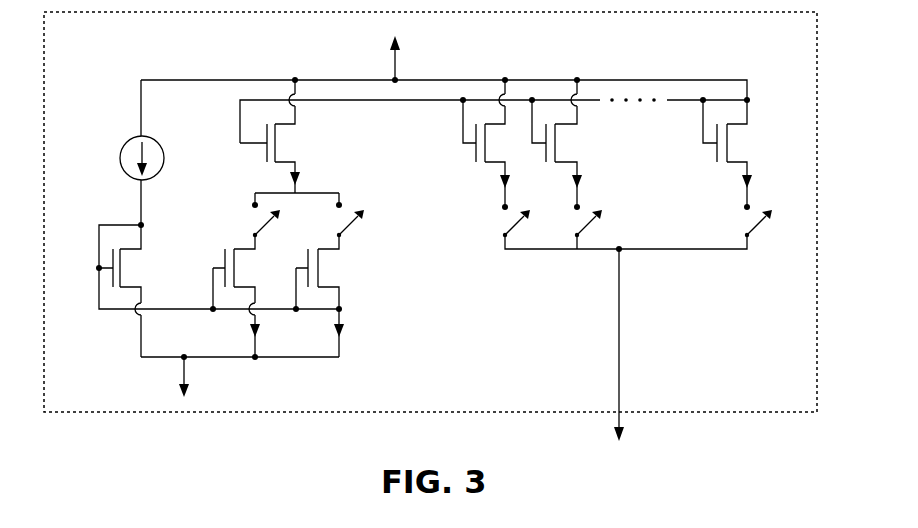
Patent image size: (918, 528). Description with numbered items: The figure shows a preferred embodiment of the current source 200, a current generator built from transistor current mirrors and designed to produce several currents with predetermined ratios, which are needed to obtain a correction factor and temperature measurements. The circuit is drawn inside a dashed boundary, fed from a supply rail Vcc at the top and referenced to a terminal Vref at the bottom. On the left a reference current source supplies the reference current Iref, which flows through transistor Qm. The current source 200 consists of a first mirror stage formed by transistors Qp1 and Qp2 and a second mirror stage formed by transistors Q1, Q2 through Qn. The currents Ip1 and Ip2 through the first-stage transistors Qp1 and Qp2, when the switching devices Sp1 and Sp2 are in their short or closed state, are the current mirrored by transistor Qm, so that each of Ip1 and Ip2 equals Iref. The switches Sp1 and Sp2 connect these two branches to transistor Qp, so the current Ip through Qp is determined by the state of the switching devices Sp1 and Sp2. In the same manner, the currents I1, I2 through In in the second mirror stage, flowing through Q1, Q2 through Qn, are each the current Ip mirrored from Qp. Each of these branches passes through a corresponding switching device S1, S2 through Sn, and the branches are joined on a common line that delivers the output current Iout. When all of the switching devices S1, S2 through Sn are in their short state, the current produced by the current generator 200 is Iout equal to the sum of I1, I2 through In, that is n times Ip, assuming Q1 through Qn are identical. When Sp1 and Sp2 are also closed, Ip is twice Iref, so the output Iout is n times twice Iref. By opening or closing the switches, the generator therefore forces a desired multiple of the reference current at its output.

The current source 200 is at (440, 412).
The supply voltage terminal Vcc is at (417, 59).
The reference current Iref is at (120, 154).
The transistor Qm is at (217, 291).
The reference voltage terminal Vref is at (240, 375).
The transistor Qp is at (287, 125).
The current Ip is at (310, 178).
The switching device Sp1 is at (242, 219).
The switching device Sp2 is at (328, 219).
The first mirror stage transistor Qp1 is at (244, 277).
The first mirror stage transistor Qp2 is at (327, 277).
The current Ip1 is at (272, 338).
The current Ip2 is at (356, 336).
The second mirror stage transistor Q1 is at (492, 125).
The second mirror stage transistor Q2 is at (561, 125).
The second mirror stage transistor Qn is at (732, 135).
The current I1 is at (488, 188).
The current I2 is at (559, 188).
The current In is at (728, 188).
The switching device S1 is at (502, 223).
The switching device S2 is at (573, 223).
The switching device Sn is at (742, 223).
The output current Iout is at (643, 343).